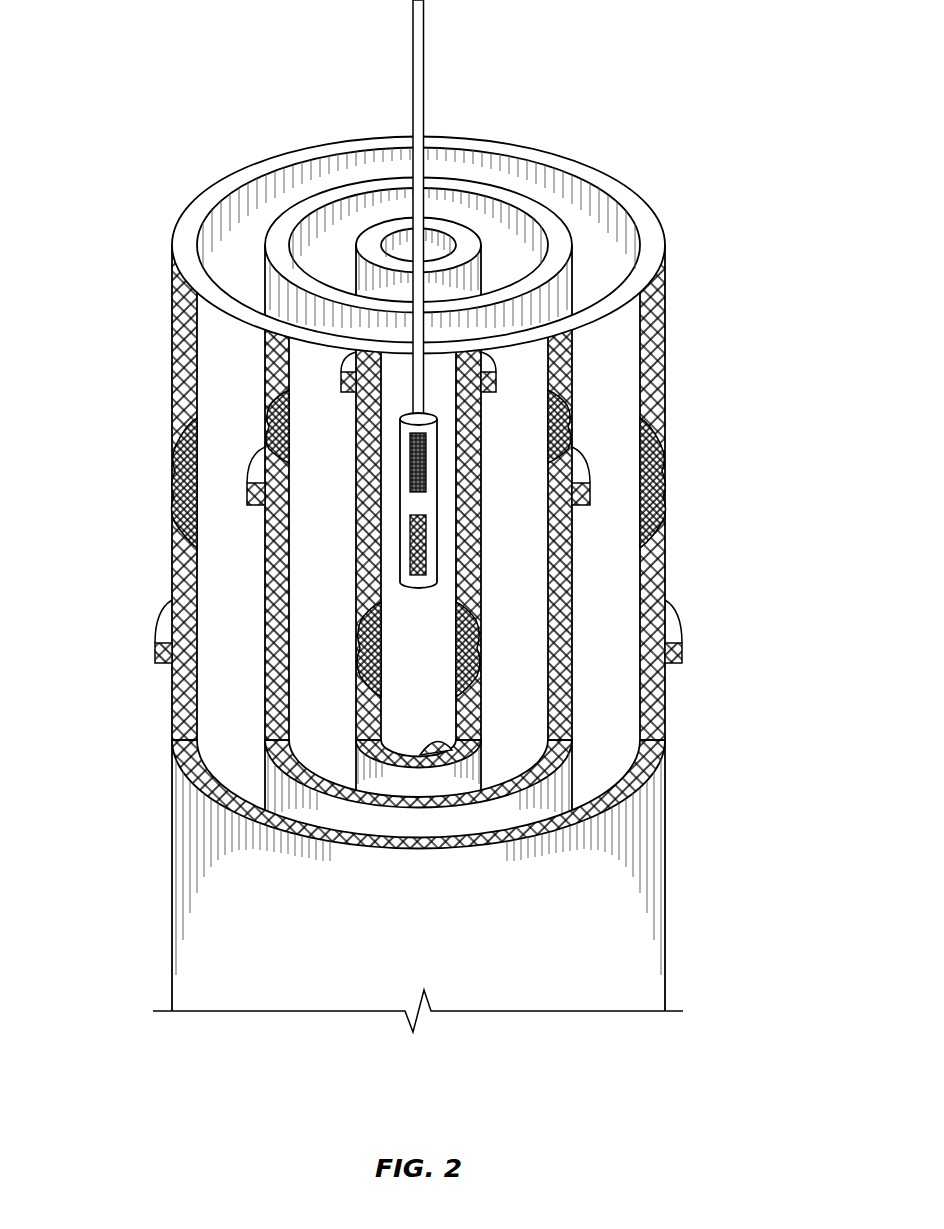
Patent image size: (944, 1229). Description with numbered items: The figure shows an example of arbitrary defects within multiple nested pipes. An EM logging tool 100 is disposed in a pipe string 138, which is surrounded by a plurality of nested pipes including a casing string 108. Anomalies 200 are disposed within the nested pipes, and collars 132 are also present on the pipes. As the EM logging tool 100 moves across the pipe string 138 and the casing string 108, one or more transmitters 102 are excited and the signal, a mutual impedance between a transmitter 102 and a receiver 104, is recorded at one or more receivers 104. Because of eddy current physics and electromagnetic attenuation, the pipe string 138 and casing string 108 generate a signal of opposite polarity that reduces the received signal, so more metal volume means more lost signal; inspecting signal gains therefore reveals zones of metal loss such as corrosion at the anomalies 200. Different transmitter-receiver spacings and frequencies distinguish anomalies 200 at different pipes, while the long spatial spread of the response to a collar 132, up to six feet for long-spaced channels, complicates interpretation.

The EM logging tool 100 is at (428, 503).
The transmitter 102 is at (420, 456).
The receiver 104 is at (420, 555).
The casing string 108 is at (762, 560).
The collar 132 is at (250, 494).
The pipe string 138 is at (463, 747).
The anomaly 200 is at (272, 410).